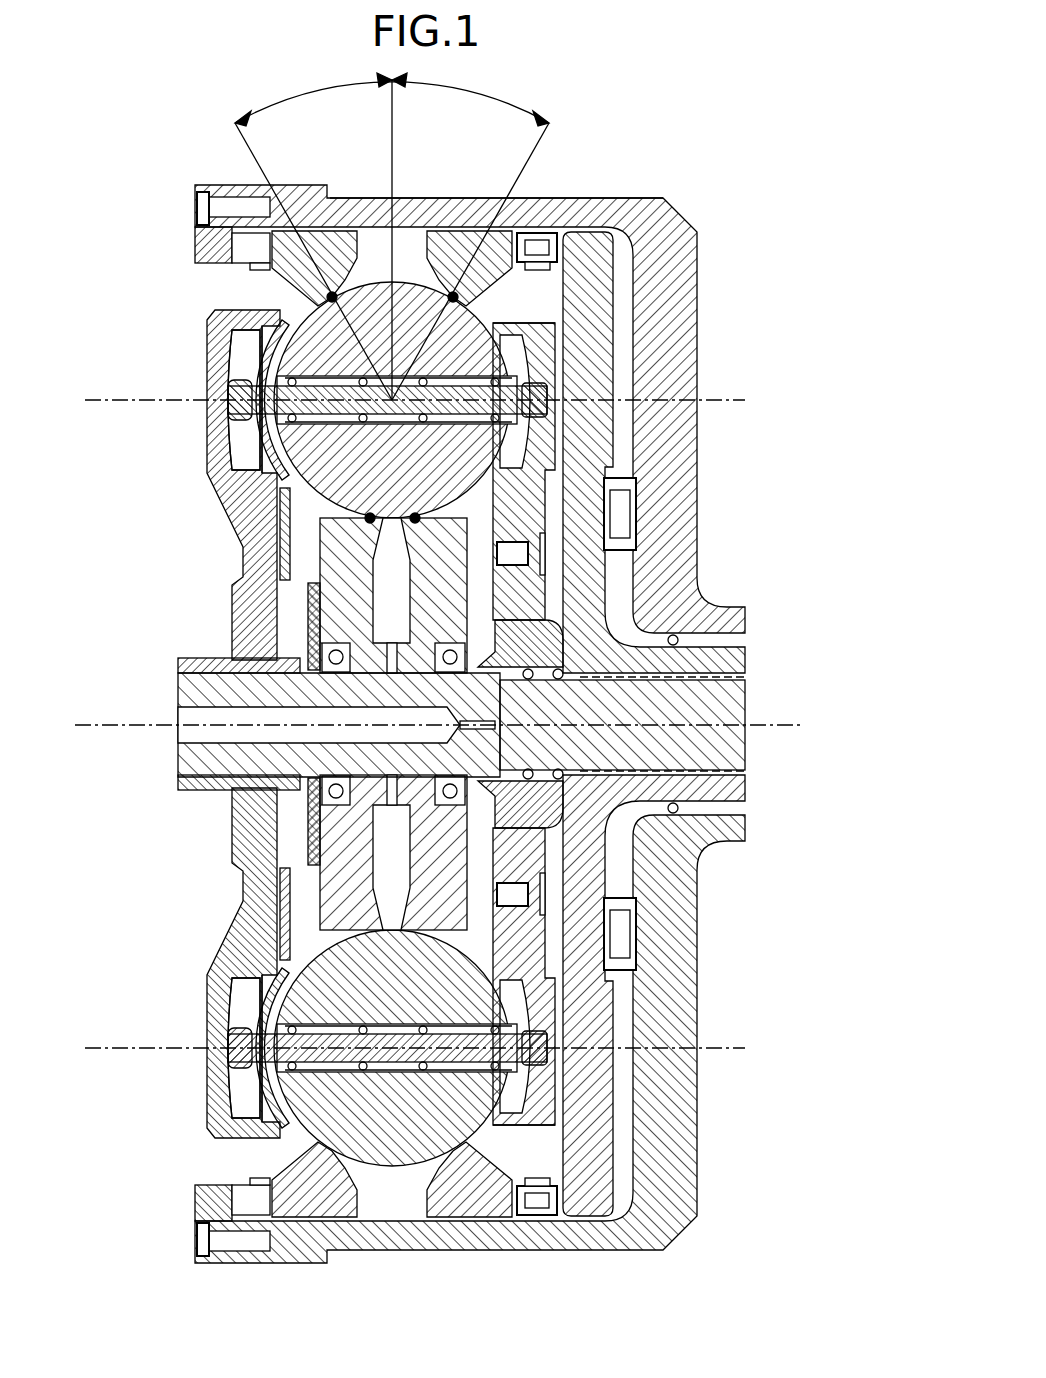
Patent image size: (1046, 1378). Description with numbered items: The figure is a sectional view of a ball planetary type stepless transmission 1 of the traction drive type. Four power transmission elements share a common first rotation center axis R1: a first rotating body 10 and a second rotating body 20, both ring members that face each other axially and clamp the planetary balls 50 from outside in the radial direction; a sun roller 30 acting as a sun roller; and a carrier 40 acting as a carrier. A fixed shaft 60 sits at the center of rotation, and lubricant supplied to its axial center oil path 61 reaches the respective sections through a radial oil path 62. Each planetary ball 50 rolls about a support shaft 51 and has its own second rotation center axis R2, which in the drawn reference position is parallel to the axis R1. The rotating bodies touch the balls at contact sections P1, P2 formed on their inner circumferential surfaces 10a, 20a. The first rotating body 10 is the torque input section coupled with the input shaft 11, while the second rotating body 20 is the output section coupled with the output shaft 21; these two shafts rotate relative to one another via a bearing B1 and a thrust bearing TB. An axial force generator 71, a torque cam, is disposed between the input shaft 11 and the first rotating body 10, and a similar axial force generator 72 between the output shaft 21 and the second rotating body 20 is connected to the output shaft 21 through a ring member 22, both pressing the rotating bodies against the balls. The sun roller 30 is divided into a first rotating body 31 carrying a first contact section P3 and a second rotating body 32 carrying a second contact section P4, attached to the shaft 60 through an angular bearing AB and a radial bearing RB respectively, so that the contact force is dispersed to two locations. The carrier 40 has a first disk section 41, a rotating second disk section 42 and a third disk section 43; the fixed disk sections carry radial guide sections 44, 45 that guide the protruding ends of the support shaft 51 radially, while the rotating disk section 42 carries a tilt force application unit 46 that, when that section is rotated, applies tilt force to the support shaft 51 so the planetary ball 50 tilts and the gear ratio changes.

The stepless transmission 1 is at (803, 136).
The first rotating body 10 is at (468, 240).
The inner circumferential surface 10a is at (470, 1135).
The input shaft 11 is at (640, 297).
The second rotating body 20 is at (308, 228).
The inner circumferential surface 20a is at (305, 1140).
The output shaft 21 is at (360, 200).
The ring member 22 is at (225, 248).
The sun roller 30 is at (291, 724).
The first rotating body 31 is at (345, 565).
The second rotating body 32 is at (383, 590).
The carrier 40 is at (600, 438).
The first disk section 41 is at (535, 313).
The second disk section 42 is at (220, 480).
The third disk section 43 is at (265, 322).
The radial guide section 44 is at (530, 360).
The radial guide section 45 is at (262, 456).
The tilt force application unit 46 is at (240, 352).
The planetary ball 50 is at (405, 290).
The support shaft 51 is at (228, 422).
The shaft 60 is at (190, 685).
The axial center oil path 61 is at (190, 745).
The radial oil path 62 is at (400, 680).
The axial force generator 71 is at (540, 244).
The axial force generator 72 is at (243, 262).
The contact section P1 is at (460, 300).
The contact section P2 is at (337, 292).
The first contact section P3 is at (420, 512).
The second contact section P4 is at (365, 515).
The thrust bearing TB is at (628, 515).
The radial bearing RB is at (330, 778).
The angular bearing AB is at (445, 778).
The bearing B1 is at (747, 639).
The first rotation center axis R1 is at (120, 716).
The second rotation center axis R2 is at (125, 392).